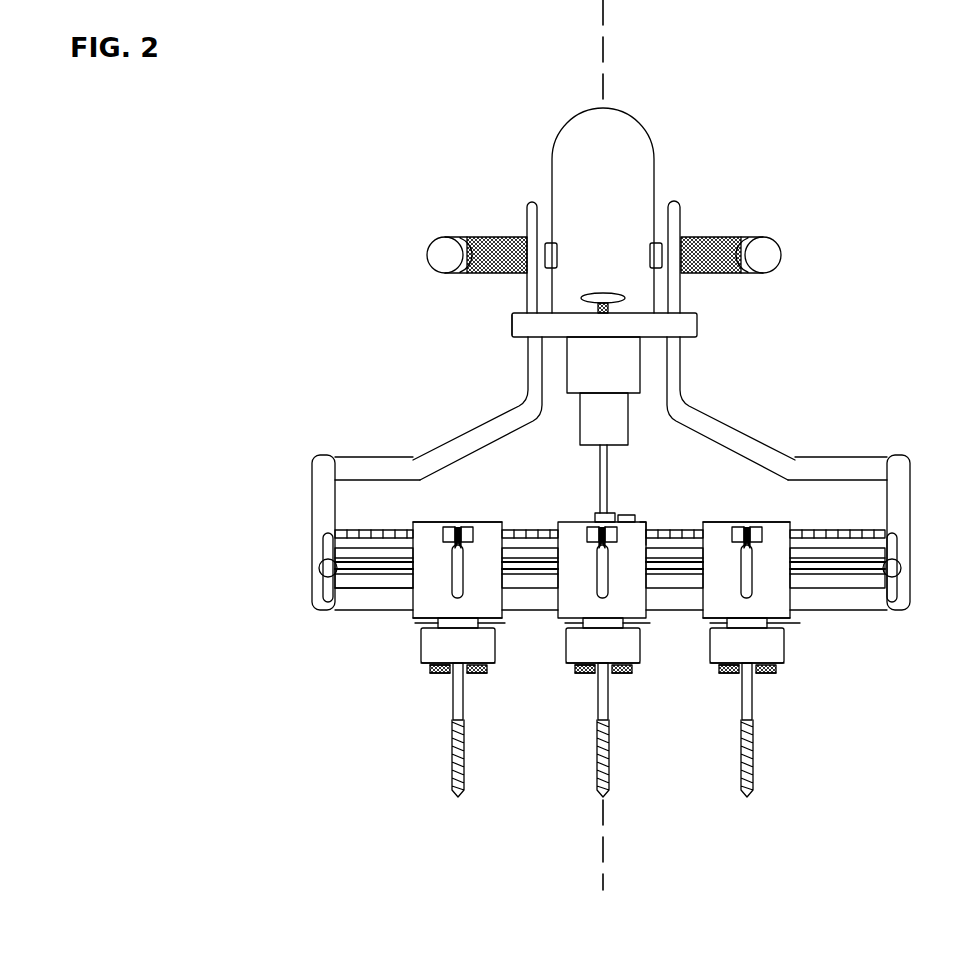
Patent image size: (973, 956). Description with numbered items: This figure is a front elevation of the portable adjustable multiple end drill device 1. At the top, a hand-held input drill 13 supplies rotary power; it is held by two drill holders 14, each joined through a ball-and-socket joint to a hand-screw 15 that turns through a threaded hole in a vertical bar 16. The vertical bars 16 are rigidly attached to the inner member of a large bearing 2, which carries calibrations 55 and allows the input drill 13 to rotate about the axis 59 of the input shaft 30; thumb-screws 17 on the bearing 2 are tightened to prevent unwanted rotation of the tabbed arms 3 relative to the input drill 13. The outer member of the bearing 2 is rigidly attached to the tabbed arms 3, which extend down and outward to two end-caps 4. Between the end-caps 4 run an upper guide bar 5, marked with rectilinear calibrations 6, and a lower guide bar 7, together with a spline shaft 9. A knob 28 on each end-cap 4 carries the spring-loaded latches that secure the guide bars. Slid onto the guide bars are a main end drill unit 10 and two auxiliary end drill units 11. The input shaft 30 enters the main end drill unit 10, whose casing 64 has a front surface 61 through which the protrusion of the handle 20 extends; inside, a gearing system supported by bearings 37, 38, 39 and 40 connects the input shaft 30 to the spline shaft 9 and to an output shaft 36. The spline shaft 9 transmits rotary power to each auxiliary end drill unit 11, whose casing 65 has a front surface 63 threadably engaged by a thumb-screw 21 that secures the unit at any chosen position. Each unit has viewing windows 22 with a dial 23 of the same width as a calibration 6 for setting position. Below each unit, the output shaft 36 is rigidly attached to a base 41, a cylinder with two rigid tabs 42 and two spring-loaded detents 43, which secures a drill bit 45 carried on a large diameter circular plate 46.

The portable adjustable multiple end drill device 1 is at (462, 365).
The large bearing 2 is at (686, 327).
The tabbed arms 3 is at (472, 438).
The end-caps 4 is at (318, 483).
The upper guide bar 5 is at (868, 530).
The rectilinear calibrations 6 is at (852, 531).
The lower guide bar 7 is at (858, 598).
The spline shaft 9 is at (372, 573).
The main end drill unit 10 is at (568, 532).
The auxiliary end drill units 11 is at (426, 530).
The input drill 13 is at (628, 143).
The drill holders 14 is at (549, 243).
The hand-screws 15 is at (436, 253).
The vertical bars 16 is at (535, 213).
The thumb-screws 17 is at (603, 294).
The handle 20 is at (597, 596).
The thumb-screw 21 is at (456, 597).
The viewing windows 22 is at (450, 526).
The dial 23 is at (462, 527).
The knob 28 is at (322, 570).
The input shaft 30 is at (607, 454).
The output shaft 36 is at (415, 623).
The bearing 37 is at (596, 514).
The bearing 38 is at (630, 515).
The bearing 39 is at (410, 552).
The bearing 40 is at (490, 626).
The base 41 is at (482, 645).
The rigid tabs 42 is at (430, 670).
The spring-loaded detents 43 is at (445, 673).
The drill bit 45 is at (457, 707).
The large diameter circular plate 46 is at (447, 666).
The calibrations 55 is at (513, 313).
The axis 59 is at (605, 10).
The front surface 61 is at (637, 538).
The front surface 63 is at (437, 585).
The casing 64 is at (647, 518).
The casing 65 is at (436, 521).